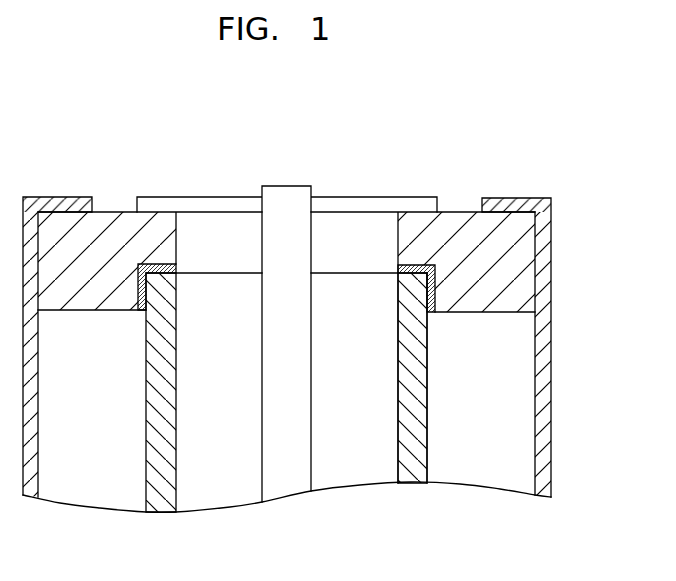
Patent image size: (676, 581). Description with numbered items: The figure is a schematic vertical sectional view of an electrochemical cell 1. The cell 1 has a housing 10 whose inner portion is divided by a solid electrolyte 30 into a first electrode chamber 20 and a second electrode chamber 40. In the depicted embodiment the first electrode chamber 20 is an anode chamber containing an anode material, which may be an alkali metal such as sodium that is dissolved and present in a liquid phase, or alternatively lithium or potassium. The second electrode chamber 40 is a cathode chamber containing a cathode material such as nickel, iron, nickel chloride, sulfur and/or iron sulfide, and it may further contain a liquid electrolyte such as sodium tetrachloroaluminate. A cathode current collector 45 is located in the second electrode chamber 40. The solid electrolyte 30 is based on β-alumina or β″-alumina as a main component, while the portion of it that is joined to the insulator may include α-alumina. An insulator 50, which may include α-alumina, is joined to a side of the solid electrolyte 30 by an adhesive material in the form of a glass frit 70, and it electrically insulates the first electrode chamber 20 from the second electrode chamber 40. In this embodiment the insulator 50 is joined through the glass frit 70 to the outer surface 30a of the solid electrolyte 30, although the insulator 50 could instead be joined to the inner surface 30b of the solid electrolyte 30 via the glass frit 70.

The electrochemical cell 1 is at (602, 116).
The housing 10 is at (541, 200).
The first electrode chamber 20 is at (471, 364).
The solid electrolyte 30 is at (412, 467).
The outer surface 30a is at (427, 438).
The inner surface 30b is at (398, 438).
The second electrode chamber 40 is at (375, 364).
The cathode current collector 45 is at (288, 198).
The insulator 50 is at (461, 230).
The glass frit 70 is at (157, 264).